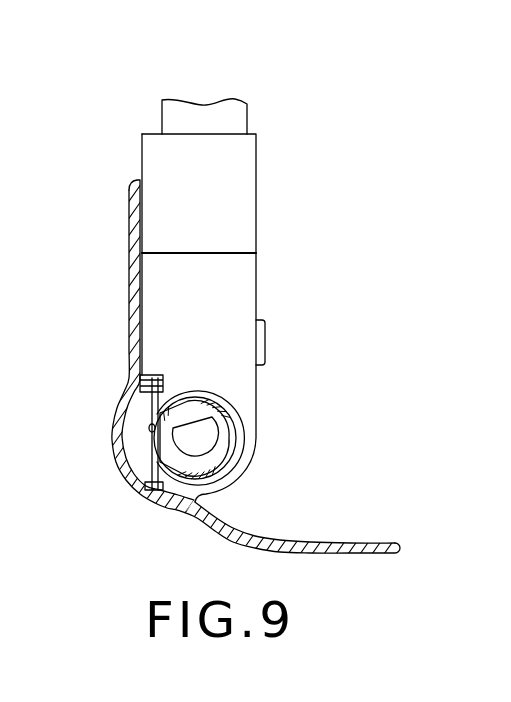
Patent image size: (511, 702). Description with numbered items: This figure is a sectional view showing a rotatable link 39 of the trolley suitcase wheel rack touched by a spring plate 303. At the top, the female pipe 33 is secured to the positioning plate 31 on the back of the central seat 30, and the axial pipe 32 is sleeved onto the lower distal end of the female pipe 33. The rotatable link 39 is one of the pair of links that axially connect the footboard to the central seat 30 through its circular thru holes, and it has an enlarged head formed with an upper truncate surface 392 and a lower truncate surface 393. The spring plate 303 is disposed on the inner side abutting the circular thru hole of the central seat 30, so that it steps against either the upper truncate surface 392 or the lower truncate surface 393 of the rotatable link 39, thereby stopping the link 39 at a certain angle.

The central seat 30 is at (363, 543).
The spring plate 303 is at (200, 458).
The positioning plate 31 is at (245, 288).
The axial pipe 32 is at (240, 168).
The female pipe 33 is at (210, 129).
The rotatable link 39 is at (200, 458).
The upper truncate surface 392 is at (160, 408).
The lower truncate surface 393 is at (163, 428).